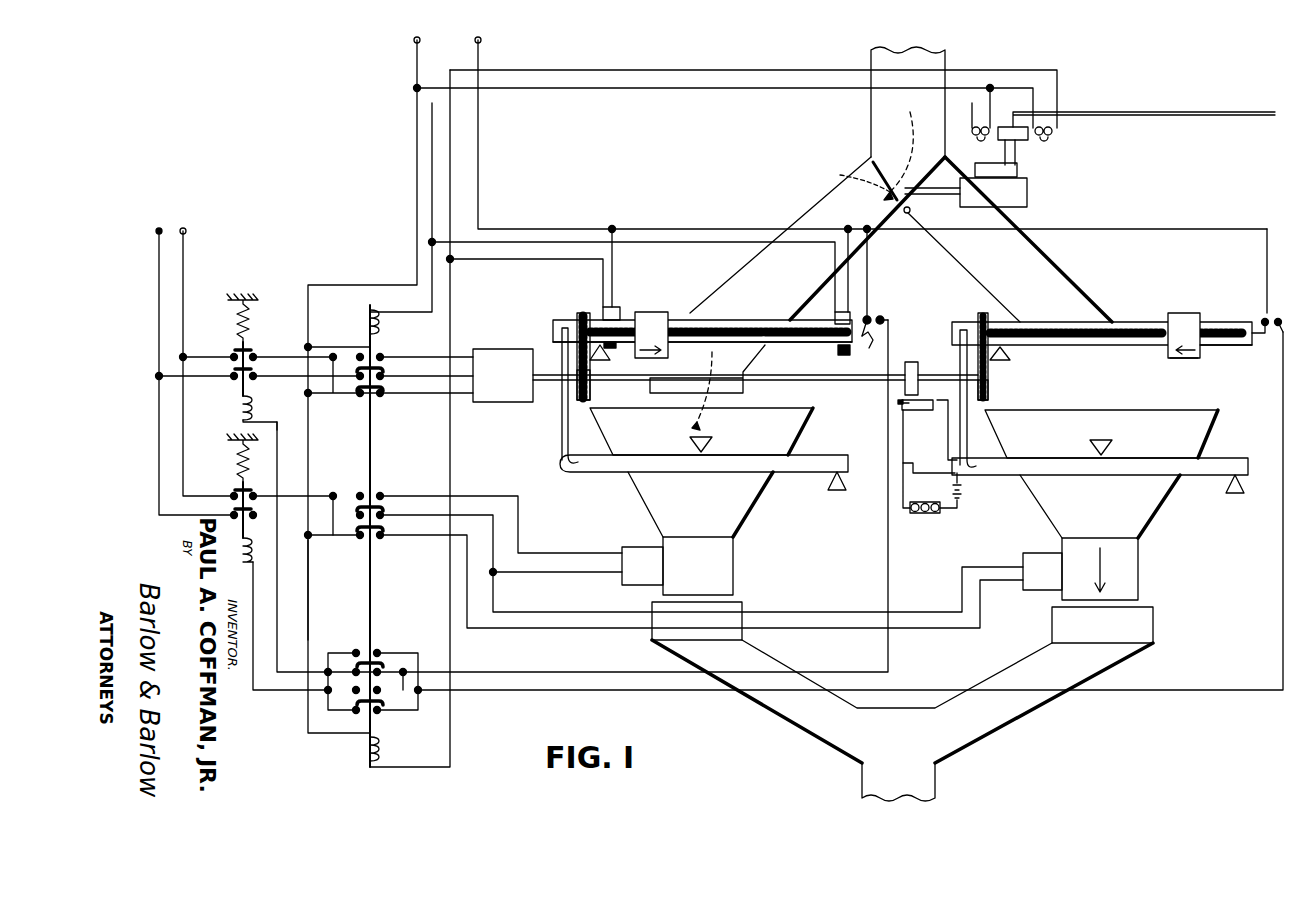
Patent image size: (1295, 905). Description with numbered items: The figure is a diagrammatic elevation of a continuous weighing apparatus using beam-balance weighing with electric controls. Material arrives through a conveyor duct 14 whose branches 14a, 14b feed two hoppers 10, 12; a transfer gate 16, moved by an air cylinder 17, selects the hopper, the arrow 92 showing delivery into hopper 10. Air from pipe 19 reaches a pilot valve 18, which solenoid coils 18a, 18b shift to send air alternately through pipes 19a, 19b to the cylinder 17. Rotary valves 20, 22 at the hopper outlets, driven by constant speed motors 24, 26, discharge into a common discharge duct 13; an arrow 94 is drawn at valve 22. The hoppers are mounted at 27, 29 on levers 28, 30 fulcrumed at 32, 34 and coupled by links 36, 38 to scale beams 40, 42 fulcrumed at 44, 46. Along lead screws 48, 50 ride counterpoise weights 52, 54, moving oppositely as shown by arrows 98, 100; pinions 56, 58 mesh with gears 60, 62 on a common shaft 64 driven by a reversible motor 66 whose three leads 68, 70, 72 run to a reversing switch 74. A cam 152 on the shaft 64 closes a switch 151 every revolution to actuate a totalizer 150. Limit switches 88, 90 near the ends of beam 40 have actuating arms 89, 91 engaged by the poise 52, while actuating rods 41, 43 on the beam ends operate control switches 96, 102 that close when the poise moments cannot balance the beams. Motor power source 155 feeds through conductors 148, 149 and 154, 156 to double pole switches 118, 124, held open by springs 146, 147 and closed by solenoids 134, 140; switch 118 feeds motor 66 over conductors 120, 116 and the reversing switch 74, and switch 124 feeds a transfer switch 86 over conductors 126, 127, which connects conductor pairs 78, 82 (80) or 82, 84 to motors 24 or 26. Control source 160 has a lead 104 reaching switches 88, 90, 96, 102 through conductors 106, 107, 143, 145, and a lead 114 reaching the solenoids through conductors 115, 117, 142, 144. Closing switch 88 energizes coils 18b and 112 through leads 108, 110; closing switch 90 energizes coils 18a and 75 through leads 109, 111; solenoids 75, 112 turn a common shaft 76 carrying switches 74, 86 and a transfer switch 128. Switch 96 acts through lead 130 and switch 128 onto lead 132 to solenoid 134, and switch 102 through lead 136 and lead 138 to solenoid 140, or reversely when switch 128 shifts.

The hopper 10 is at (802, 437).
The hopper 12 is at (1210, 432).
The discharge duct 13 is at (1008, 718).
The conveyor duct 14 is at (938, 52).
The branch of conveyor duct 14a is at (830, 190).
The branch of conveyor duct 14b is at (1050, 280).
The transfer gate 16 is at (880, 160).
The air cylinder 17 is at (1028, 195).
The pilot valve 18 is at (1025, 140).
The solenoid coil 18a is at (978, 125).
The solenoid coil 18b is at (1048, 125).
The air pipe 19 is at (1160, 110).
The air pipe 19a is at (1003, 152).
The air pipe 19b is at (1018, 171).
The rotary valve 20 is at (735, 572).
The rotary valve 22 is at (1140, 582).
The constant speed motor 24 is at (636, 545).
The constant speed motor 26 is at (1042, 552).
The hopper mounting 27 is at (714, 441).
The lever 28 is at (602, 473).
The hopper mounting 29 is at (1112, 444).
The lever 30 is at (1000, 472).
The fulcrum 32 is at (832, 482).
The fulcrum 34 is at (1228, 490).
The link 36 is at (561, 437).
The link 38 is at (968, 441).
The scale beam 40 is at (800, 343).
The actuating rod 41 is at (870, 346).
The scale beam 42 is at (1222, 346).
The actuating rod 43 is at (1268, 338).
The fulcrum 44 is at (600, 362).
The fulcrum 46 is at (1010, 357).
The lead screw 48 is at (776, 343).
The lead screw 50 is at (1122, 330).
The counterpoise weight 52 is at (665, 325).
The counterpoise weight 54 is at (1184, 312).
The pinion 56 is at (576, 318).
The pinion 58 is at (978, 318).
The gear 60 is at (591, 396).
The gear 62 is at (990, 395).
The common shaft 64 is at (822, 388).
The constant speed motor 66 is at (495, 403).
The motor lead 68 is at (425, 380).
The motor lead 70 is at (435, 393).
The motor lead 72 is at (428, 357).
The reversing switch 74 is at (349, 405).
The solenoid coil 75 is at (382, 324).
The common shaft 76 is at (368, 446).
The conductor 78 is at (384, 496).
The conductor 80 is at (560, 575).
The conductor 82 is at (472, 505).
The conductor 84 is at (405, 545).
The transfer switch 86 is at (350, 548).
The limit switch device 88 is at (613, 306).
The actuating arm 89 is at (615, 349).
The limit switch device 90 is at (868, 316).
The actuating arm 91 is at (842, 357).
The arrow 92 is at (840, 175).
The discharge direction 94 is at (1098, 552).
The control switch 96 is at (882, 317).
The arrow 98 is at (651, 312).
The arrow 100 is at (1180, 360).
The control switch 102 is at (1262, 318).
The lead 104 is at (480, 150).
The conductor 106 is at (615, 242).
The conductor 107 is at (832, 262).
The lead 108 is at (516, 266).
The main lead 109 is at (715, 250).
The lead 110 is at (455, 213).
The conductor 111 is at (428, 258).
The solenoid coil 112 is at (364, 748).
The lead 114 is at (415, 115).
The conductor 115 is at (598, 70).
The conductor 116 is at (275, 378).
The conductor 117 is at (330, 337).
The double pole single throw switch 118 is at (225, 352).
The conductor 120 is at (262, 356).
The double pole single throw switch 124 is at (225, 492).
The conductor 126 is at (313, 494).
The conductor 127 is at (349, 541).
The transfer switch 128 is at (349, 638).
The lead 130 is at (886, 571).
The lead 132 is at (275, 617).
The solenoid 134 is at (238, 410).
The lead 136 is at (1282, 628).
The lead 138 is at (252, 641).
The solenoid 140 is at (243, 563).
The conductor 142 is at (286, 400).
The conductor 143 is at (869, 268).
The conductor 144 is at (300, 540).
The conductor 145 is at (1265, 264).
The spring 146 is at (248, 310).
The spring 147 is at (235, 455).
The conductor 148 is at (205, 380).
The conductor 149 is at (205, 355).
The solenoid-operated totalizer 150 is at (930, 516).
The switch 151 is at (912, 420).
The cam 152 is at (928, 352).
The conductor 154 is at (157, 505).
The power source 155 is at (180, 236).
The conductor 156 is at (180, 458).
The power source 160 is at (415, 48).